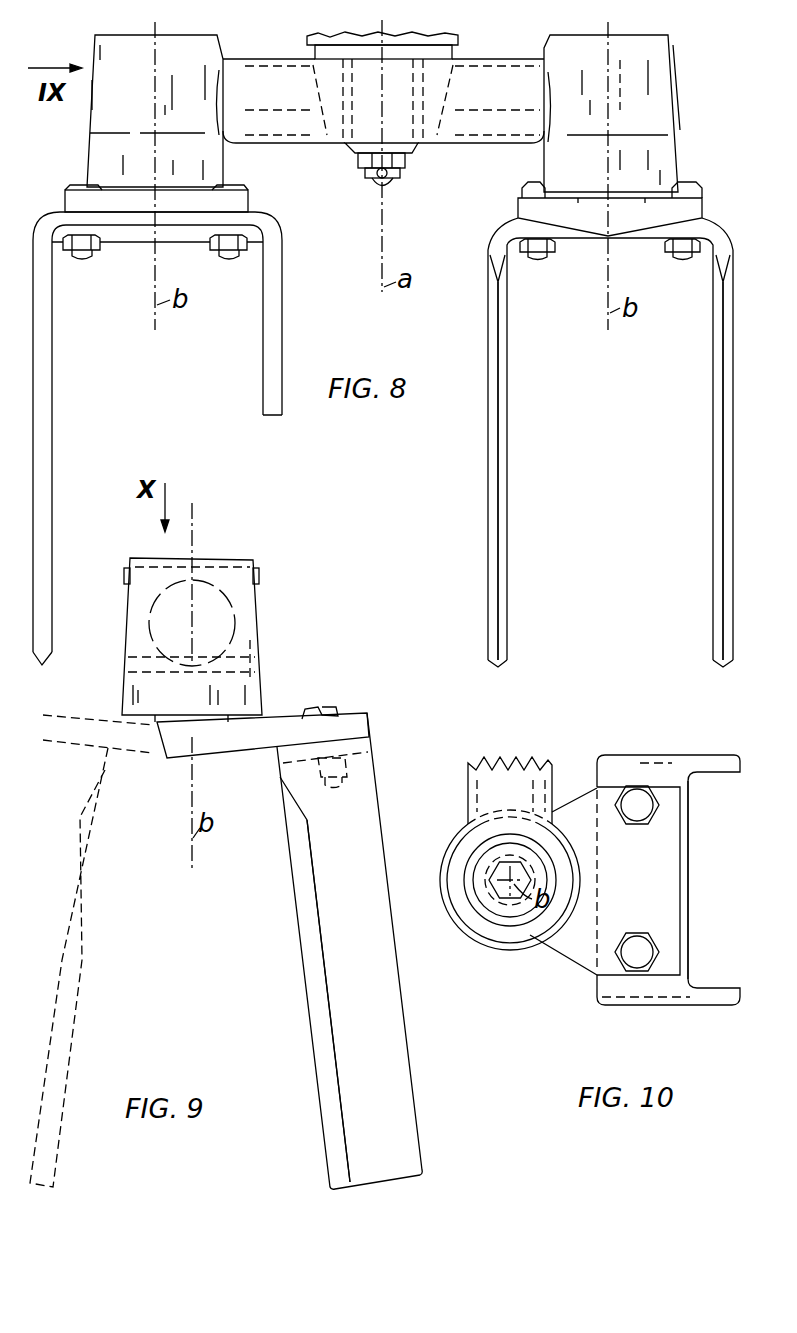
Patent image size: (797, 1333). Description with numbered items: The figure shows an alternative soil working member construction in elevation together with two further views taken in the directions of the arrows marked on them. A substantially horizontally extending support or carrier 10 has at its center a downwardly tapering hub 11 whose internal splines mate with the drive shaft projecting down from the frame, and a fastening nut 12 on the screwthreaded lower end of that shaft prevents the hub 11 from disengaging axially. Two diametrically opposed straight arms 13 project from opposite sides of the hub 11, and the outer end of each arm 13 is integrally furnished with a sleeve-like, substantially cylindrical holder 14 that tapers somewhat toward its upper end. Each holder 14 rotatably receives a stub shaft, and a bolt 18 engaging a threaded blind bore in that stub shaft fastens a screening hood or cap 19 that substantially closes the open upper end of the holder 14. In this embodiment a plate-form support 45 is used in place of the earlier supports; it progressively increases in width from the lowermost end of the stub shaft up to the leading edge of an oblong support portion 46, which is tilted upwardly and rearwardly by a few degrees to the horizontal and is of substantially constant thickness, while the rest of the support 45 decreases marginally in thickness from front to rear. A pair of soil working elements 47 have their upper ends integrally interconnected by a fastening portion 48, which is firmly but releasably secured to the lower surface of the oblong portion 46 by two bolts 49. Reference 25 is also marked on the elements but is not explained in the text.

In FIG. 8, the support or carrier 10 is at (298, 55).
In FIG. 10, the support or carrier 10 is at (486, 753).
In FIG. 8, the hub 11 is at (455, 59).
In FIG. 9, the hub 11 is at (261, 574).
In FIG. 8, the fastening nut 12 is at (393, 174).
In FIG. 8, the arm 13 is at (291, 145).
In FIG. 9, the arm 13 is at (232, 612).
In FIG. 10, the arm 13 is at (527, 763).
In FIG. 8, the holder 14 is at (87, 121).
In FIG. 9, the holder 14 is at (257, 641).
In FIG. 10, the bolt 18 is at (507, 903).
In FIG. 10, the screening hood or cap 19 is at (480, 912).
In FIG. 8, the leaf spring 25 is at (498, 479).
In FIG. 9, the leaf spring 25 is at (72, 1072).
In FIG. 8, the support 45 is at (518, 202).
In FIG. 9, the support 45 is at (188, 760).
In FIG. 10, the support 45 is at (572, 963).
In FIG. 8, the oblong support portion 46 is at (198, 191).
In FIG. 9, the oblong support portion 46 is at (94, 724).
In FIG. 10, the oblong support portion 46 is at (675, 845).
In FIG. 8, the soil working element 47 is at (48, 434).
In FIG. 9, the soil working element 47 is at (370, 811).
In FIG. 10, the soil working element 47 is at (718, 755).
In FIG. 8, the fastening portion 48 is at (176, 227).
In FIG. 9, the fastening portion 48 is at (367, 750).
In FIG. 10, the fastening portion 48 is at (690, 917).
In FIG. 8, the bolt 49 is at (83, 260).
In FIG. 9, the bolt 49 is at (328, 707).
In FIG. 10, the bolt 49 is at (638, 828).